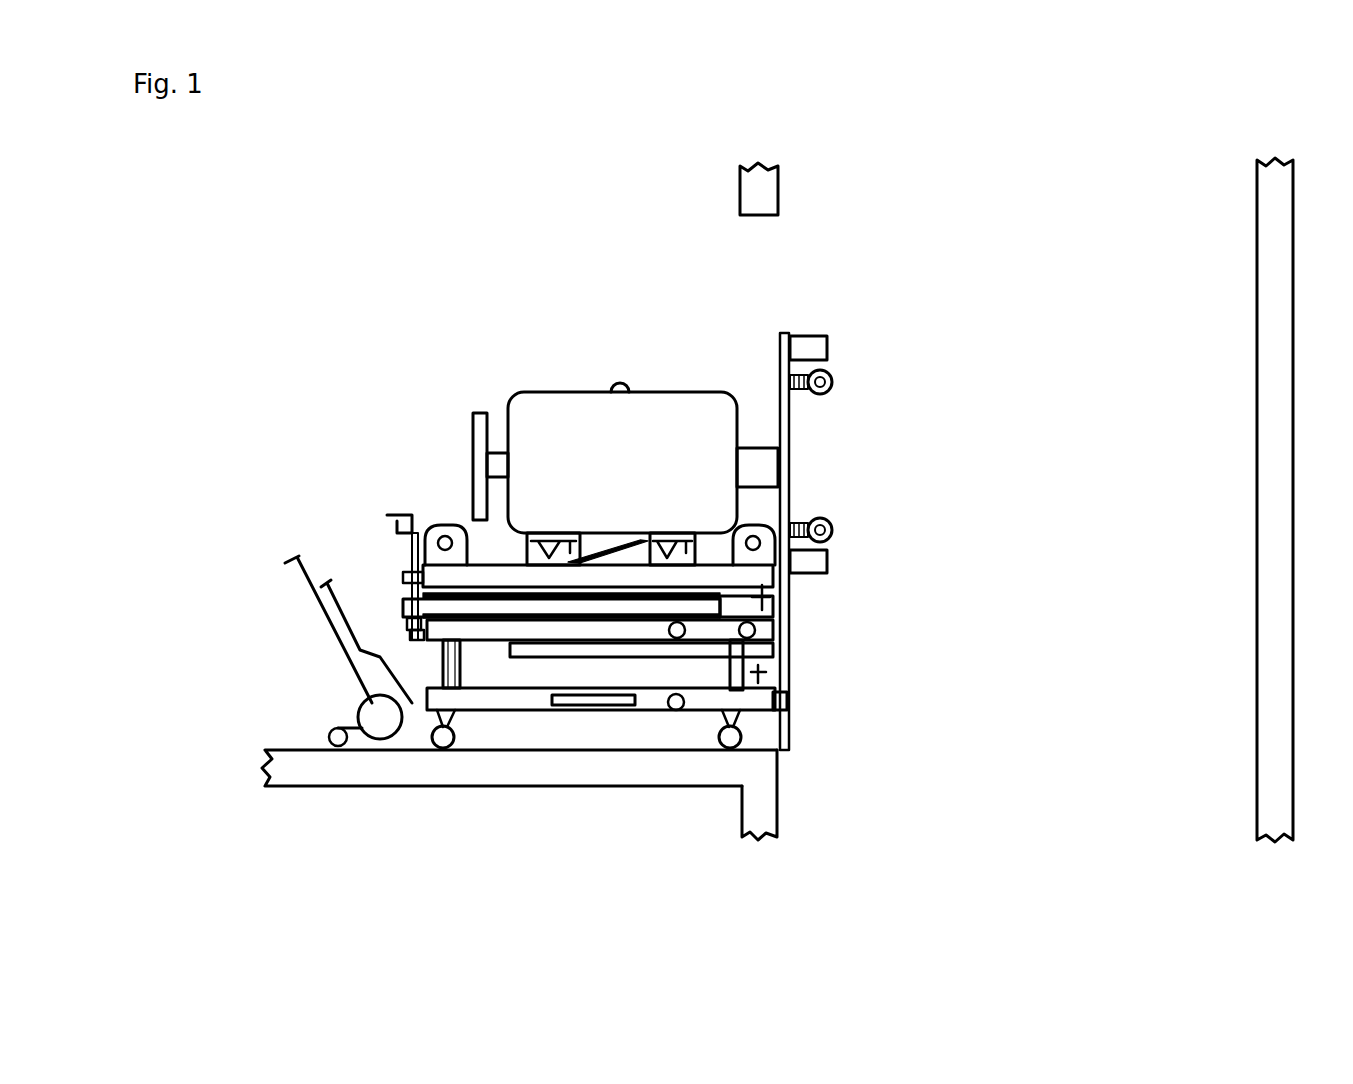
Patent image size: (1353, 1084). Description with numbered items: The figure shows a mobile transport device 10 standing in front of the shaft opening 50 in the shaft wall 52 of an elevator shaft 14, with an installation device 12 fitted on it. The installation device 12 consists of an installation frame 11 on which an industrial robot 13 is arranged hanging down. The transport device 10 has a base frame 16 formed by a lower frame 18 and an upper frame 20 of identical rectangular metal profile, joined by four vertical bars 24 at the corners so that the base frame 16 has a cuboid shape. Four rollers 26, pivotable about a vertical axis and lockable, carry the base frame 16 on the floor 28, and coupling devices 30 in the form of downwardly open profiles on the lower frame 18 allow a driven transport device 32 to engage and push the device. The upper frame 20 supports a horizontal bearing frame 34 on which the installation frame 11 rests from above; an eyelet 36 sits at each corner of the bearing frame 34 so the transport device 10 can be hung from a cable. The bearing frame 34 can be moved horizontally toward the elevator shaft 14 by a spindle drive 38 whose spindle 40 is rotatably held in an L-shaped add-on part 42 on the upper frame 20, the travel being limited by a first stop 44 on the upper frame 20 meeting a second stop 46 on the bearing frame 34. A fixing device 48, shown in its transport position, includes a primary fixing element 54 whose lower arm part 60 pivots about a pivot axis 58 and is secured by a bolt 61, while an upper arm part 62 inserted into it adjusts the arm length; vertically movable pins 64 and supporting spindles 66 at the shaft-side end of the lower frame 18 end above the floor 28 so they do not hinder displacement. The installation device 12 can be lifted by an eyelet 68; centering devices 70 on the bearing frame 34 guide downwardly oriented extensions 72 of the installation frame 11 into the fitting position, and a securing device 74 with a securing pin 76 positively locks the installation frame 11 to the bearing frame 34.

The mobile transport device 10 is at (370, 472).
The installation frame 11 is at (700, 530).
The installation device 12 is at (450, 268).
The industrial robot 13 is at (597, 557).
The elevator shaft 14 is at (1160, 217).
The base frame 16 is at (808, 631).
The lower frame 18 is at (466, 750).
The upper frame 20 is at (782, 622).
The bars 24 is at (452, 716).
The rollers 26 is at (435, 742).
The floor 28 is at (280, 749).
The coupling devices 30 is at (386, 743).
The driven transport device 32 is at (417, 643).
The bearing frame 34 is at (485, 560).
The eyelet 36 is at (440, 525).
The spindle drive 38 is at (385, 558).
The spindle 40 is at (397, 575).
The L-shaped add-on part 42 is at (420, 641).
The first stop 44 is at (798, 600).
The second stop 46 is at (393, 517).
The fixing device 48 is at (812, 683).
The shaft opening 50 is at (770, 242).
The shaft wall 52 is at (752, 183).
The primary fixing element 54 is at (497, 703).
The pivot axis 58 is at (677, 640).
The lower arm part 60 is at (500, 664).
The bolt 61 is at (785, 603).
The upper arm part 62 is at (397, 605).
The pins 64 is at (782, 746).
The spindles 66 is at (775, 742).
The eyelet 68 is at (617, 382).
The centering devices 70 is at (714, 543).
The extensions 72 is at (675, 535).
The securing device 74 is at (662, 535).
The securing pin 76 is at (553, 535).